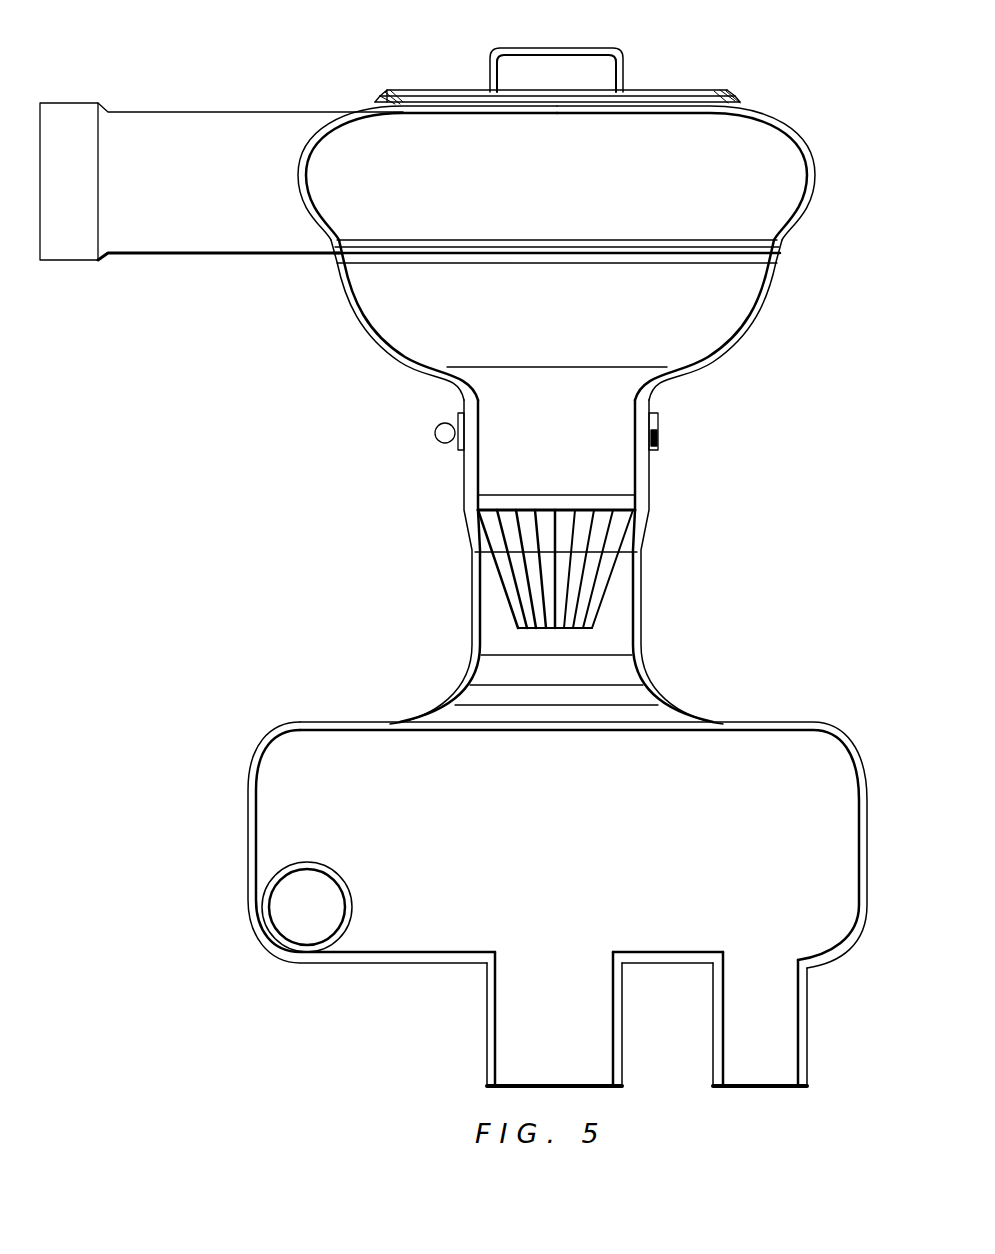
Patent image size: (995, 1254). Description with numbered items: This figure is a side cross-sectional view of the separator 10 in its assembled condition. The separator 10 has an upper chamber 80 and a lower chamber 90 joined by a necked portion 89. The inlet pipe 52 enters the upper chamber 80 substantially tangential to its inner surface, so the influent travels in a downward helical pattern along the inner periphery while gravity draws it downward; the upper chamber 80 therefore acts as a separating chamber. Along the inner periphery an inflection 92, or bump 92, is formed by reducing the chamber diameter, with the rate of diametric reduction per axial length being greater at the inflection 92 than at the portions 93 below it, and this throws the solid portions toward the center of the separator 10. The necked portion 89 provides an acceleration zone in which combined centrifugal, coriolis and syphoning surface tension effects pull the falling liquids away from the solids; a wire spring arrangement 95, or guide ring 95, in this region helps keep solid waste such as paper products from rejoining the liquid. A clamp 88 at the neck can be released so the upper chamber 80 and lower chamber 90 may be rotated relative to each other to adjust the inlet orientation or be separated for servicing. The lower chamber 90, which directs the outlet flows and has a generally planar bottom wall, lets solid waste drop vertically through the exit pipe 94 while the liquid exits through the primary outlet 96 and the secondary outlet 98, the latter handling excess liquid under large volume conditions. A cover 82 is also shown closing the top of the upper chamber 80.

The separator 10 is at (188, 515).
The inlet pipe 52 is at (188, 243).
The upper chamber 80 is at (828, 132).
The cover 82 is at (712, 90).
The clamp 88 is at (660, 440).
The necked portion 89 is at (446, 537).
The lower chamber 90 is at (214, 856).
The inflection 92 is at (793, 249).
The portions below the inflection 93 is at (792, 330).
The exit pipe 94 is at (503, 1043).
The wire spring arrangement 95 is at (630, 542).
The primary outlet 96 is at (297, 955).
The secondary outlet 98 is at (790, 1032).